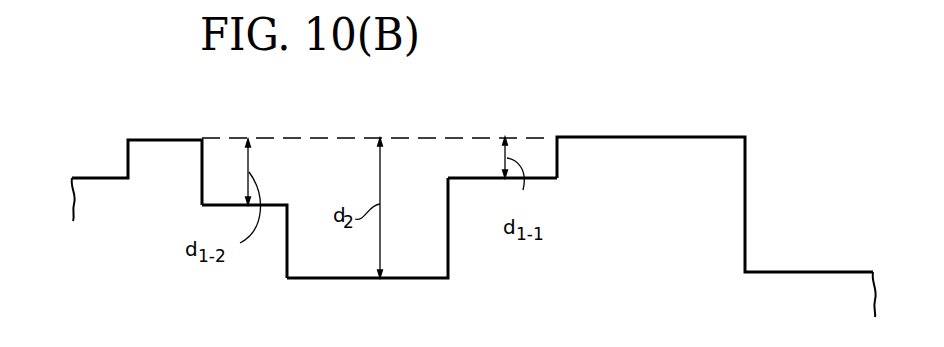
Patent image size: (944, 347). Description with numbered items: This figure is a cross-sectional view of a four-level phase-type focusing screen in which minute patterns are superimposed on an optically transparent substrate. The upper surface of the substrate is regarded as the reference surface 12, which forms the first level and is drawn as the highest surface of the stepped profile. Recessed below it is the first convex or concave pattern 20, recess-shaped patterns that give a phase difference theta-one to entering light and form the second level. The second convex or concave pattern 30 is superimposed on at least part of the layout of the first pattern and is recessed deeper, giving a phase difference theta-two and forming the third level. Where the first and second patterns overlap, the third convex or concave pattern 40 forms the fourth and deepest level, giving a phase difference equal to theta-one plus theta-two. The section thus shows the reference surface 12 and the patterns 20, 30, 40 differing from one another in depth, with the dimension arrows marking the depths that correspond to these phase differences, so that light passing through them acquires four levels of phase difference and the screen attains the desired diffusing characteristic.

The reference surface 12 is at (603, 137).
The first convex or concave pattern 20 is at (465, 178).
The second convex or concave pattern 30 is at (220, 203).
The third convex or concave pattern 40 is at (313, 278).